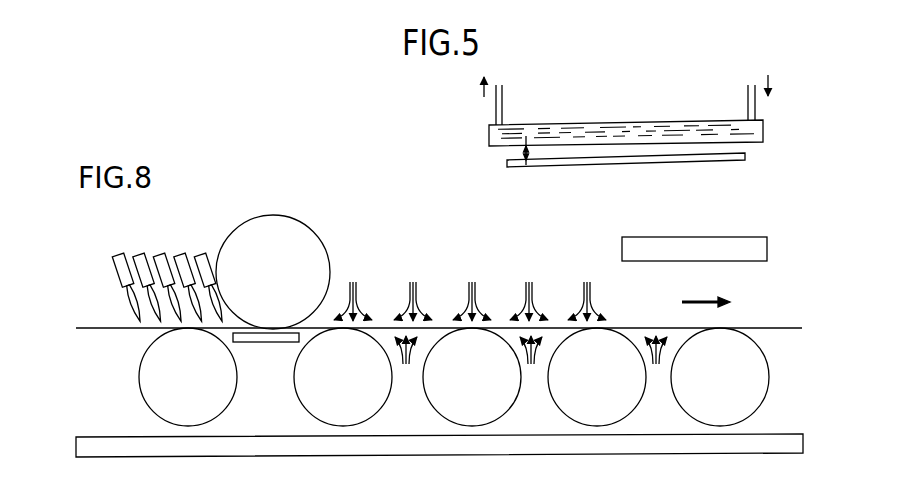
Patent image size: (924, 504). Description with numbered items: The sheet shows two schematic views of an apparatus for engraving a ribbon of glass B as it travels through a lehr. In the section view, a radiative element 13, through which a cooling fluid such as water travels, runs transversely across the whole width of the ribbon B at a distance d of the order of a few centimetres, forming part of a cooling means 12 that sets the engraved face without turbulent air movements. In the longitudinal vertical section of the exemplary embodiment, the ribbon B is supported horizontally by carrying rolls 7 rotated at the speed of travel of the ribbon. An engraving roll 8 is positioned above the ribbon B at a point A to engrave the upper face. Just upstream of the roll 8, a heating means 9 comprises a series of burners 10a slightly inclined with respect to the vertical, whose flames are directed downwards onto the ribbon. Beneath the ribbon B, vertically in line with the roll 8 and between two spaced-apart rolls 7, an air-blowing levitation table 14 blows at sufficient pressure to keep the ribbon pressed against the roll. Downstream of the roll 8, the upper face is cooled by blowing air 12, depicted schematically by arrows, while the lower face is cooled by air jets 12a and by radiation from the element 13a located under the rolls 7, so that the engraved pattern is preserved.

In FIG. 5, the radiative element 13 is at (685, 120).
In FIG. 8, the radiative element 13 is at (762, 250).
In FIG. 5, the cooling means 12 is at (775, 126).
In FIG. 8, the cooling means 12 is at (523, 288).
In FIG. 5, the ribbon of glass B is at (705, 161).
In FIG. 8, the ribbon of glass B is at (784, 327).
In FIG. 5, the distance d is at (515, 152).
In FIG. 8, the heating means 9 is at (144, 268).
In FIG. 8, the burners 10a is at (199, 256).
In FIG. 8, the engraving roll 8 is at (293, 222).
In FIG. 8, the point A is at (270, 322).
In FIG. 8, the rolls 7 is at (138, 365).
In FIG. 8, the levitation table 14 is at (267, 343).
In FIG. 8, the radiative element 13a is at (110, 448).
In FIG. 8, the air jets 12a is at (406, 365).